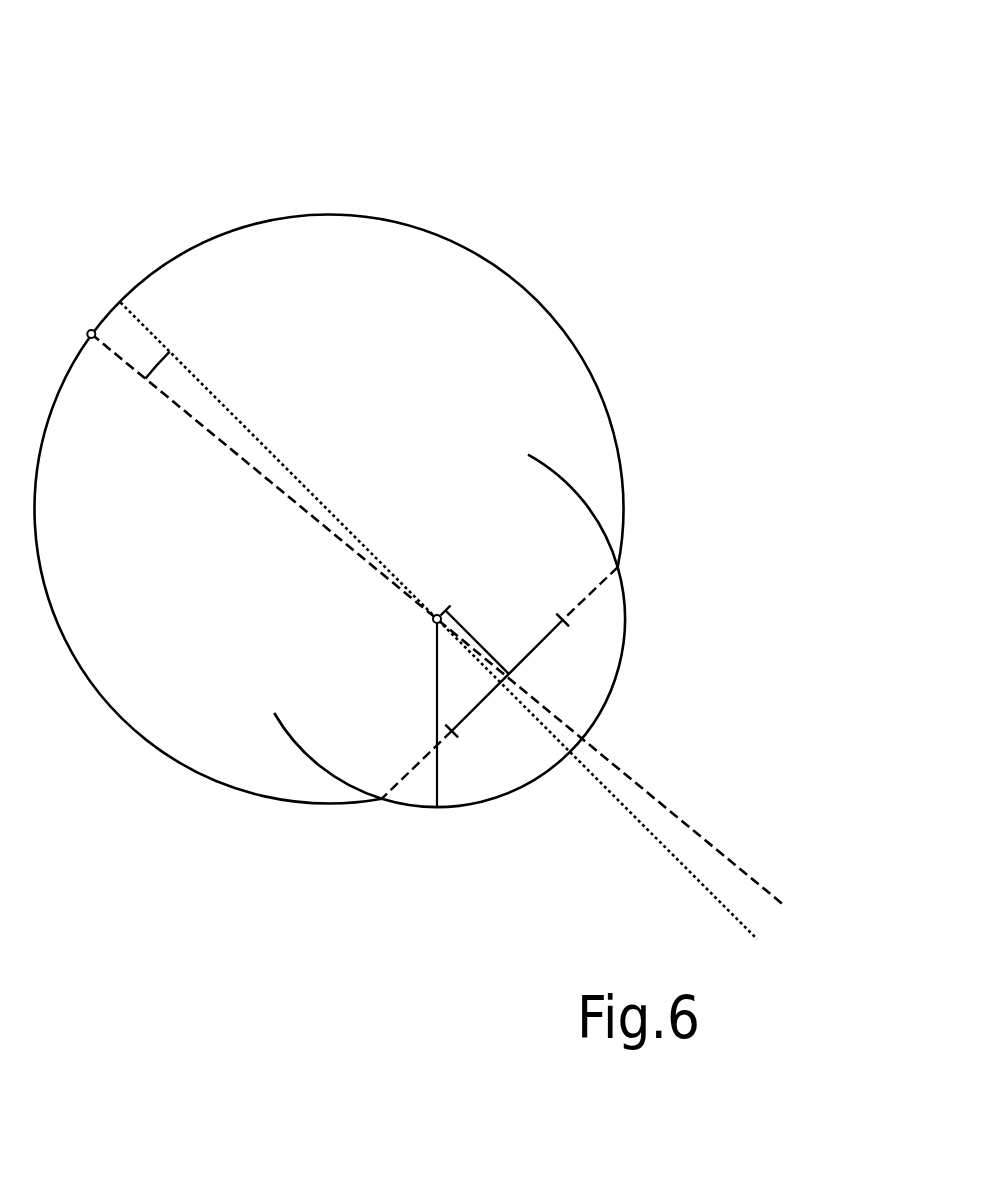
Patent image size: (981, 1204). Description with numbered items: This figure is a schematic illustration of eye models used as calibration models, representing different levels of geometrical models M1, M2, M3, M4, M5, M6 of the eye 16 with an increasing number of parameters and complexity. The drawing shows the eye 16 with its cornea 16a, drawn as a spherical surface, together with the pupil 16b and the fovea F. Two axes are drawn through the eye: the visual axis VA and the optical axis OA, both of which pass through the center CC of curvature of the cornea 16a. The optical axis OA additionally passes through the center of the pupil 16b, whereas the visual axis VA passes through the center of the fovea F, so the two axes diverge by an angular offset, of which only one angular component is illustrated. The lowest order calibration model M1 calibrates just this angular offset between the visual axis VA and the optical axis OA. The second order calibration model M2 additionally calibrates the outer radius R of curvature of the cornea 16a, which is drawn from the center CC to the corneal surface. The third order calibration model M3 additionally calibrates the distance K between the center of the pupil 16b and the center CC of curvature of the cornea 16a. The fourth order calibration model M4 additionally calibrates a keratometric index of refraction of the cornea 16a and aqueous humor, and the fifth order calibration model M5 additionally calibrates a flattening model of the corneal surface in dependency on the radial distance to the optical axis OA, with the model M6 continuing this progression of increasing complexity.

The lowest order calibration model M1 is at (402, 412).
The second order calibration model M2 is at (402, 412).
The third order calibration model M3 is at (402, 412).
The fourth order calibration model M4 is at (402, 412).
The fifth order calibration model M5 is at (402, 412).
The sixth order calibration model M6 is at (374, 155).
The eye 16 is at (612, 389).
The cornea 16a is at (627, 640).
The pupil 16b is at (547, 634).
The fovea F is at (91, 330).
The center of curvature of the cornea CC is at (432, 620).
The outer radius of curvature of the cornea R is at (439, 738).
The distance between pupil center and corneal center of curvature K is at (472, 638).
The optical axis OA is at (712, 897).
The visual axis VA is at (735, 865).